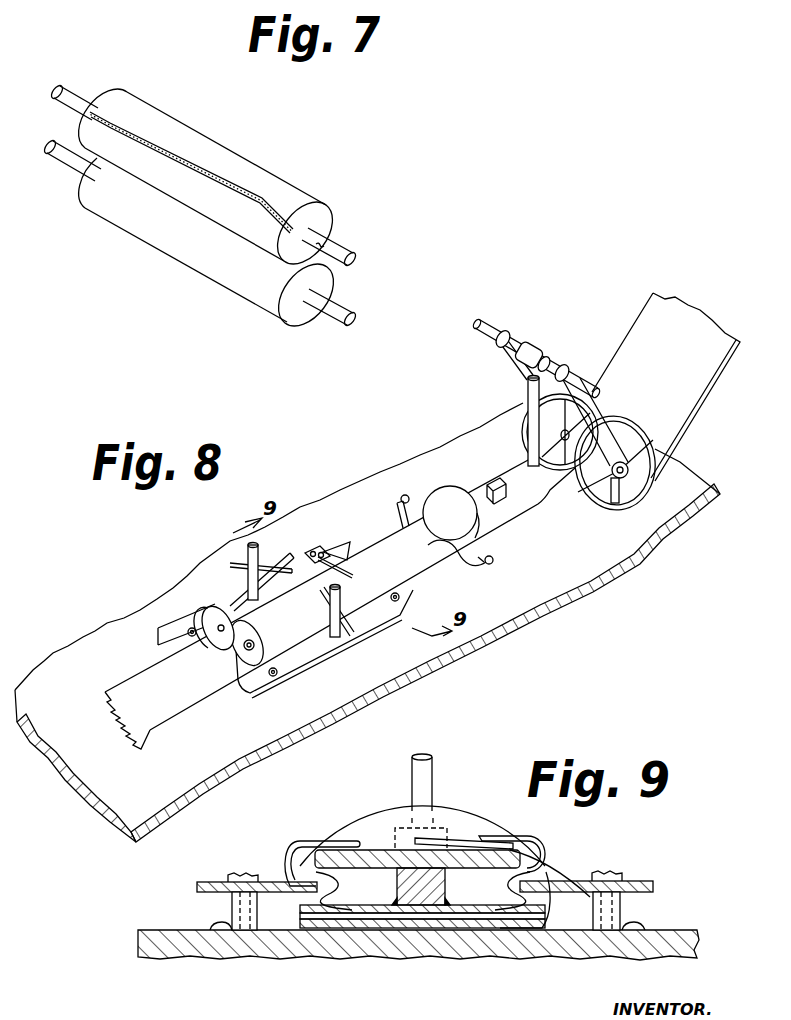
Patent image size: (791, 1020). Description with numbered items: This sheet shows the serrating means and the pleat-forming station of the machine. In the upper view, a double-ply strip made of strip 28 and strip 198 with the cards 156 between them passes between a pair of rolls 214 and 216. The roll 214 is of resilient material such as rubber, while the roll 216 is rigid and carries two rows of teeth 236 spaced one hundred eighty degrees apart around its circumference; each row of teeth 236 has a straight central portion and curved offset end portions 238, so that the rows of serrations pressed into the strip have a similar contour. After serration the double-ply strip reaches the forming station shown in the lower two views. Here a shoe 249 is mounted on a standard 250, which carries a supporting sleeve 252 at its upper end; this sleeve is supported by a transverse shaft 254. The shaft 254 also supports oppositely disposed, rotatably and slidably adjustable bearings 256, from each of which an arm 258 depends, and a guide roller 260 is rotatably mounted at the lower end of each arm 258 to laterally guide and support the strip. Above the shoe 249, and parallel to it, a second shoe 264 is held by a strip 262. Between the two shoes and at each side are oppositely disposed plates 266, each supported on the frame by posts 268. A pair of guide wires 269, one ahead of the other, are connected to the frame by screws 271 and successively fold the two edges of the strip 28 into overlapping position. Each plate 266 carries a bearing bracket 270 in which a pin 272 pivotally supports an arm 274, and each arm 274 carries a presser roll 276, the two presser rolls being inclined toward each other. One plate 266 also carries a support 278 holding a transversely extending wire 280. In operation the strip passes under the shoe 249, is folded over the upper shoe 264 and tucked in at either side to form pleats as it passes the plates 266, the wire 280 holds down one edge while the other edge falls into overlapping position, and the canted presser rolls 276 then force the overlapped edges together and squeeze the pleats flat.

In FIG. 7, the roll 214 is at (185, 253).
In FIG. 7, the roll 216 is at (263, 172).
In FIG. 7, the teeth 236 is at (197, 157).
In FIG. 7, the curved offset end portions 238 is at (112, 118).
In FIG. 8, the shoe 249 is at (507, 517).
In FIG. 9, the shoe 249 is at (410, 927).
In FIG. 8, the standard 250 is at (528, 403).
In FIG. 8, the supporting sleeve 252 is at (530, 344).
In FIG. 8, the transverse shaft 254 is at (551, 360).
In FIG. 8, the adjustable bearings 256 is at (503, 331).
In FIG. 8, the arm 258 is at (510, 365).
In FIG. 8, the guide roller 260 is at (525, 442).
In FIG. 9, the strip 262 is at (435, 887).
In FIG. 8, the second shoe 264 is at (432, 505).
In FIG. 9, the second shoe 264 is at (457, 863).
In FIG. 8, the plates 266 is at (177, 637).
In FIG. 9, the plates 266 is at (198, 887).
In FIG. 9, the posts 268 is at (230, 911).
In FIG. 8, the guide wires 269 is at (400, 506).
In FIG. 9, the guide wires 269 is at (312, 840).
In FIG. 8, the bearing bracket 270 is at (250, 575).
In FIG. 8, the screws 271 is at (478, 557).
In FIG. 9, the screws 271 is at (225, 928).
In FIG. 8, the pin 272 is at (240, 565).
In FIG. 8, the arm 274 is at (310, 610).
In FIG. 8, the presser roll 276 is at (247, 653).
In FIG. 8, the support 278 is at (313, 553).
In FIG. 9, the support 278 is at (227, 877).
In FIG. 8, the wire 280 is at (330, 547).
In FIG. 9, the wire 280 is at (377, 850).
In FIG. 9, the strip 28 is at (513, 855).
In FIG. 9, the cards 156 is at (347, 920).
In FIG. 9, the strip 198 is at (367, 913).